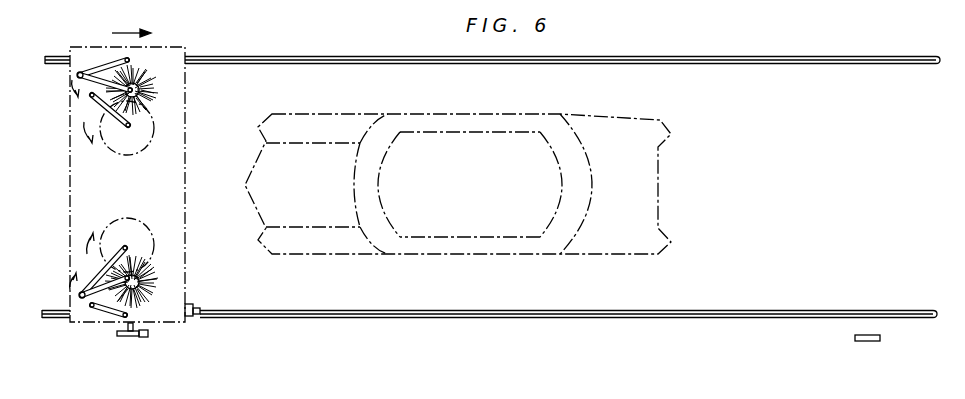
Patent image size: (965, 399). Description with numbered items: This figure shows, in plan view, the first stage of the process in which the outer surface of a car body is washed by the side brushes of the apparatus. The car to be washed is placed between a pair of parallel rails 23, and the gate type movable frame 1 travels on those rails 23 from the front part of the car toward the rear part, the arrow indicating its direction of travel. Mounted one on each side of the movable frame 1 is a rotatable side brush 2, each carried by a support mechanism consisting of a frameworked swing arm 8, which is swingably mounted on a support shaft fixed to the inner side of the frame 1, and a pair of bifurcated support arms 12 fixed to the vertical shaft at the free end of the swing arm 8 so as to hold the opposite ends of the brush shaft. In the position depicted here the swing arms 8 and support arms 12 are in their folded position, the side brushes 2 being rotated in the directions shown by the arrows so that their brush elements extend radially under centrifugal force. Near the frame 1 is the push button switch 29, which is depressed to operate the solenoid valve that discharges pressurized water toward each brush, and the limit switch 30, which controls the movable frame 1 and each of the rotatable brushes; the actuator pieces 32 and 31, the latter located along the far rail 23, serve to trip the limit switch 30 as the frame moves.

The gate type movable frame 1 is at (183, 43).
The rotatable side brush 2 is at (150, 64).
The swing arm 8 is at (97, 64).
The bifurcated support arm 12 is at (80, 72).
The rail 23 is at (690, 56).
The push button switch 29 is at (197, 308).
The limit switch 30 is at (150, 333).
The actuator piece 31 is at (855, 337).
The actuator piece 32 is at (118, 334).